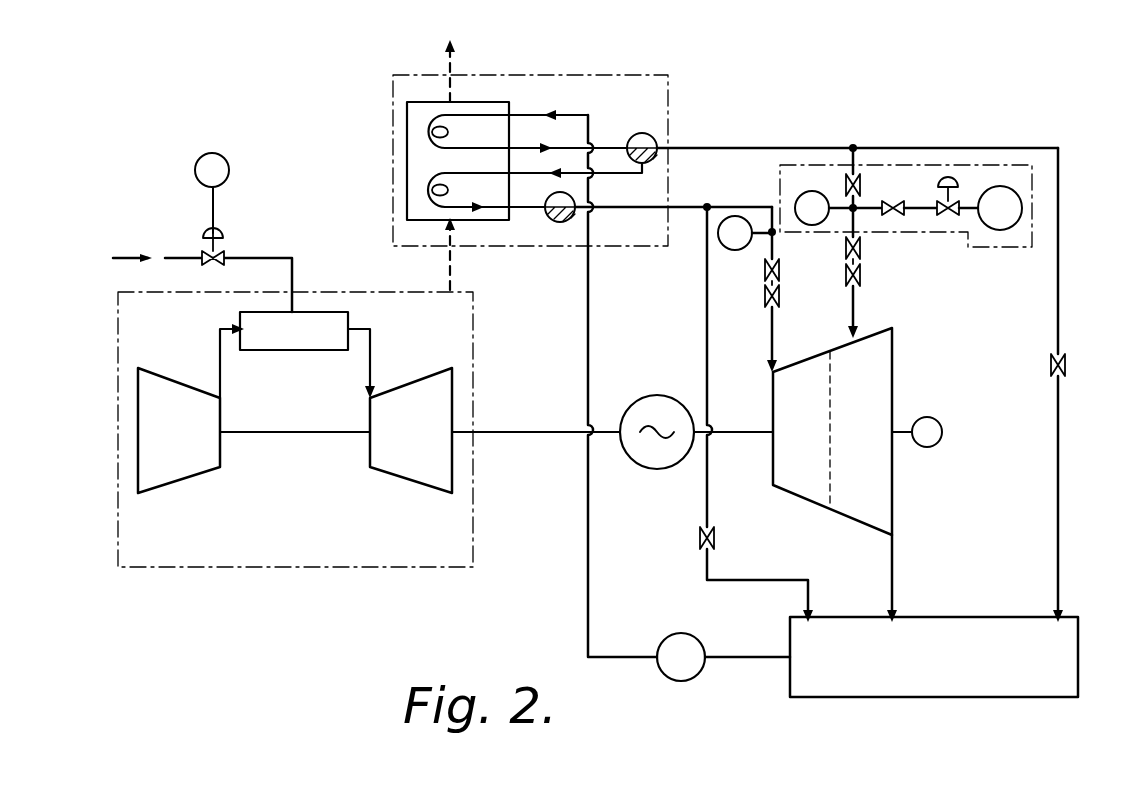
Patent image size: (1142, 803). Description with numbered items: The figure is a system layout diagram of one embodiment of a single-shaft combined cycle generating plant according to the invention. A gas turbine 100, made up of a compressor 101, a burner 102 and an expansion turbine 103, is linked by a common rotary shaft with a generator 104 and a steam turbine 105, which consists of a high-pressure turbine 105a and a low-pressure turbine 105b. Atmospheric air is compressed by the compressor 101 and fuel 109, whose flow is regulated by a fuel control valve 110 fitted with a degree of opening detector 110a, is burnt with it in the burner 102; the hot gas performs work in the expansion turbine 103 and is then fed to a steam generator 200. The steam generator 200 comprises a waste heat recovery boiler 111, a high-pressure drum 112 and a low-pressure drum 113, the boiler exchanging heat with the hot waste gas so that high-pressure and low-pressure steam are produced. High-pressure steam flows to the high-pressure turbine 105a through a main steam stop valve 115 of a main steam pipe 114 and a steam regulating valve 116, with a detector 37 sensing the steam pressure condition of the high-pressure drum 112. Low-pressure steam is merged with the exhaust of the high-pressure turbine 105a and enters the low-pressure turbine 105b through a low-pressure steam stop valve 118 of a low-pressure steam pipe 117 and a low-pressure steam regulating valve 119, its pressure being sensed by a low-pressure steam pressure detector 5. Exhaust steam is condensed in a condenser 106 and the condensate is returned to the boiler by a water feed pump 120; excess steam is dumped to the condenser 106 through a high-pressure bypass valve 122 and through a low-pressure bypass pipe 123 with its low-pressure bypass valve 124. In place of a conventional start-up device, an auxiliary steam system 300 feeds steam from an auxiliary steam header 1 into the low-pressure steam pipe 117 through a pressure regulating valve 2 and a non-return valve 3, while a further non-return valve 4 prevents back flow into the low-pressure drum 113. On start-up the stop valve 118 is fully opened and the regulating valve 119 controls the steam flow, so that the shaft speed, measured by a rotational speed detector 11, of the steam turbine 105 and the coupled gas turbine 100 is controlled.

The auxiliary steam header 1 is at (1000, 230).
The pressure regulating valve 2 is at (948, 222).
The non-return valve 3 is at (893, 220).
The non-return valve 4 is at (862, 185).
The low-pressure steam pressure detector 5 is at (812, 191).
The rotational speed detector 11 is at (940, 422).
The detector 37 is at (710, 238).
The gas turbine 100 is at (352, 292).
The compressor 101 is at (197, 478).
The burner 102 is at (302, 352).
The expansion turbine 103 is at (397, 478).
The generator 104 is at (633, 458).
The steam turbine 105 is at (835, 475).
The high-pressure turbine 105a is at (801, 428).
The low-pressure turbine 105b is at (861, 431).
The condenser 106 is at (945, 697).
The fuel 109 is at (120, 258).
The fuel control valve 110 is at (225, 238).
The degree of opening detector 110a is at (222, 157).
The waste heat recovery boiler 111 is at (407, 158).
The high-pressure drum 112 is at (560, 222).
The low-pressure drum 113 is at (645, 133).
The main steam pipe 114 is at (737, 216).
The main steam stop valve 115 is at (765, 270).
The steam regulating valve 116 is at (765, 298).
The low-pressure steam pipe 117 is at (856, 146).
The low-pressure steam stop valve 118 is at (846, 250).
The low-pressure steam regulating valve 119 is at (846, 282).
The water feed pump 120 is at (692, 680).
The high-pressure bypass valve 122 is at (700, 540).
The low-pressure bypass pipe 123 is at (1062, 268).
The low-pressure bypass valve 124 is at (1068, 365).
The steam generator 200 is at (606, 75).
The auxiliary steam system 300 is at (984, 165).